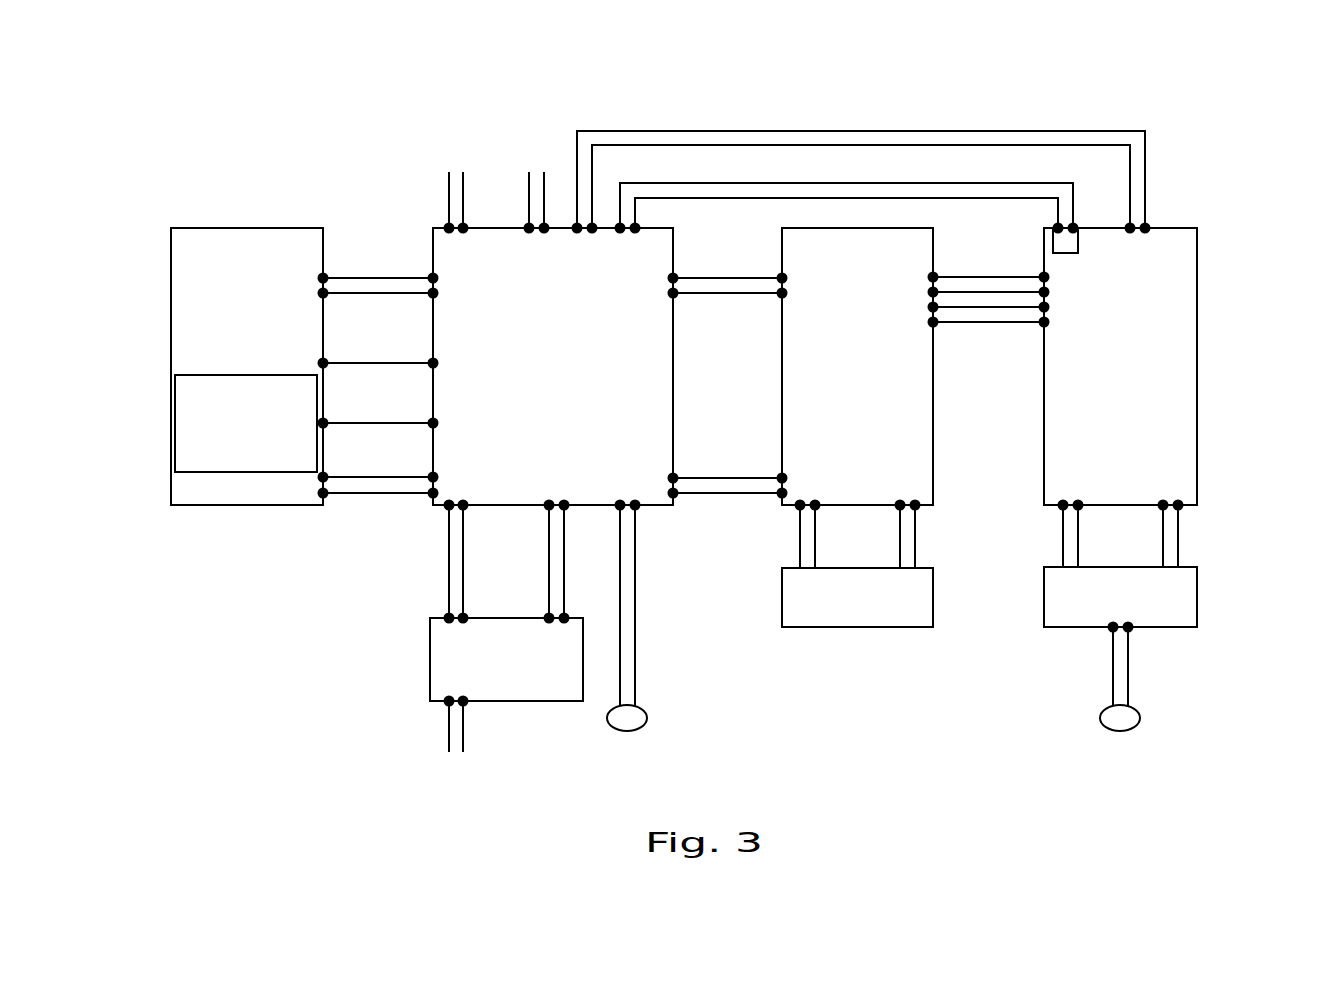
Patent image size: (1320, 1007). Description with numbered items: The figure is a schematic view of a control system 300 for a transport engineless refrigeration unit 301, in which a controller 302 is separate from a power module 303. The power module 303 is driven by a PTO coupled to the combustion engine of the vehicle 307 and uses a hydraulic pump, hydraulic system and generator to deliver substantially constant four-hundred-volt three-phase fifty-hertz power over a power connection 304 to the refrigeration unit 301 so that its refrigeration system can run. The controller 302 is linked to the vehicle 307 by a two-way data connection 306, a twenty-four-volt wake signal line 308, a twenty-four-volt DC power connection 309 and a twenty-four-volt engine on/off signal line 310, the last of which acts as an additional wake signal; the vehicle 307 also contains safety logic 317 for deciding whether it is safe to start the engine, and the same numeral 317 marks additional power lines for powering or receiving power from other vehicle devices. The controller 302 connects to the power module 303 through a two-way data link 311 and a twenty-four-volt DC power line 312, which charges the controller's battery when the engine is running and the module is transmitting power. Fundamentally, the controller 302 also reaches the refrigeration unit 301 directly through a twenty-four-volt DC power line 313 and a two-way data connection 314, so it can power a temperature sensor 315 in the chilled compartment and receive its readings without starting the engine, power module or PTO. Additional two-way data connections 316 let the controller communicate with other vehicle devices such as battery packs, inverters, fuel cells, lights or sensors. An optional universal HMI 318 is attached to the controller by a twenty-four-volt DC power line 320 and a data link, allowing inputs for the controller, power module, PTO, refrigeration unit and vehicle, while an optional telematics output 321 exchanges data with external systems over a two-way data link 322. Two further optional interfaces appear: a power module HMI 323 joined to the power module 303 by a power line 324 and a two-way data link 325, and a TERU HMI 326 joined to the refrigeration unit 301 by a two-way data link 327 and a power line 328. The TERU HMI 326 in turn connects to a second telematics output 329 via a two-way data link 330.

The control system 300 is at (458, 98).
The transport engineless refrigeration unit 301 is at (1197, 422).
The controller 302 is at (673, 382).
The power module 303 is at (933, 425).
The power connection 304 is at (993, 275).
The two-way data connection 306 is at (378, 276).
The vehicle 307 is at (268, 228).
The 24V wake signal line 308 is at (365, 422).
The 24V DC power connection 309 is at (358, 477).
The 24V engine on/off signal line 310 is at (392, 362).
The two-way data link 311 is at (708, 276).
The 24V DC power line 312 is at (715, 477).
The 24V DC power line 313 is at (905, 183).
The two-way data connection 314 is at (975, 131).
The temperature sensor 315 is at (1071, 246).
The additional two-way data connections 316 is at (448, 183).
The safety logic 317 is at (257, 377).
The universal HMI 318 is at (430, 663).
The 24V DC power line 320 is at (563, 530).
The telematics output 321 is at (643, 712).
The two-way data link 322 is at (637, 636).
The power module HMI 323 is at (859, 627).
The power line 324 is at (800, 538).
The two-way data link 325 is at (917, 542).
The TERU HMI 326 is at (1198, 597).
The two-way data link 327 is at (1180, 548).
The power line 328 is at (1063, 538).
The second telematics output 329 is at (1136, 707).
The two-way data link 330 is at (1130, 667).